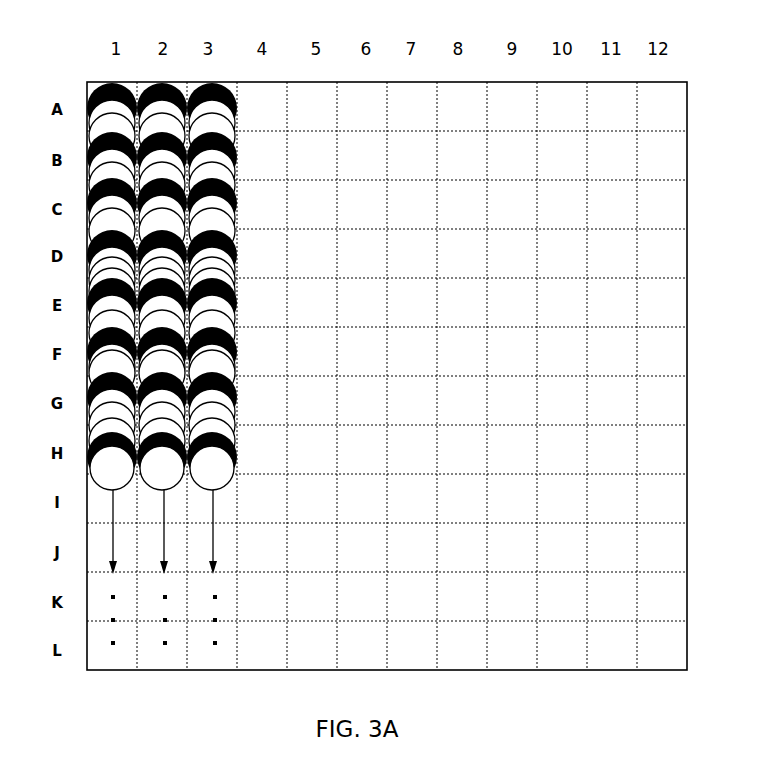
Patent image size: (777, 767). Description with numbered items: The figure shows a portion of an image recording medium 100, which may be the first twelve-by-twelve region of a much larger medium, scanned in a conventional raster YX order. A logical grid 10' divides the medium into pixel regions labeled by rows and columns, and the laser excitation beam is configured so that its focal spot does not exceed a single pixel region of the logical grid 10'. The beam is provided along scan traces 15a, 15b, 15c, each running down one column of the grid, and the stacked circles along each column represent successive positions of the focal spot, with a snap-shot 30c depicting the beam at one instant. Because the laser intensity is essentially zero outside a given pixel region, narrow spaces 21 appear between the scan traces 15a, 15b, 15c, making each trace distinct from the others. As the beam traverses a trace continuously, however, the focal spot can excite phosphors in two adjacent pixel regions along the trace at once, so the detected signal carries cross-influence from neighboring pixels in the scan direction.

The image recording medium 100 is at (108, 82).
The narrow spaces 21 is at (137, 80).
The logical grid 10' is at (409, 376).
The snap-shot 30c is at (162, 468).
The scan trace 15a is at (115, 553).
The scan trace 15b is at (166, 553).
The scan trace 15c is at (215, 553).